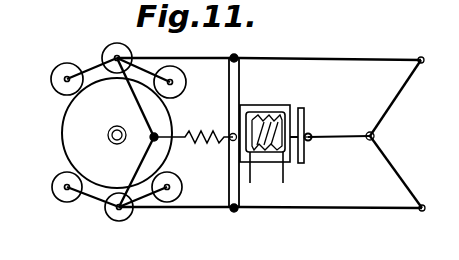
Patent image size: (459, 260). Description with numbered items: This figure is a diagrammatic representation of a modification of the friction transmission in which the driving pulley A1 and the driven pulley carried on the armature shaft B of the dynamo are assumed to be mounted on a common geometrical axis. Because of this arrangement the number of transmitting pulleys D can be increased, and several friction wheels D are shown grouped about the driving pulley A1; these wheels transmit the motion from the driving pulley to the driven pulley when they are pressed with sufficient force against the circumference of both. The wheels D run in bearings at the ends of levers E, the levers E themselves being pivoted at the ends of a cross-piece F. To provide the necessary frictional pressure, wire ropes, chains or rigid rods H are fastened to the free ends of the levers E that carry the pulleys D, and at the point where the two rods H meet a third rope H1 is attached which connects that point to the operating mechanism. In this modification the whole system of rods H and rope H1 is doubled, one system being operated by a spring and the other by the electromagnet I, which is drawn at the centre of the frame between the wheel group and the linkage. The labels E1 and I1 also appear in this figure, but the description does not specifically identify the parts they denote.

The friction-wheels D is at (105, 54).
The wire ropes or rods H is at (132, 95).
The pulley A1 is at (117, 133).
The third rope H1 is at (158, 140).
The levers E is at (194, 58).
The frame bar extension E1 is at (335, 225).
The cross-piece F is at (239, 86).
The electromagnet I is at (268, 164).
The armature plate I1 is at (304, 121).
The shaft B is at (414, 253).